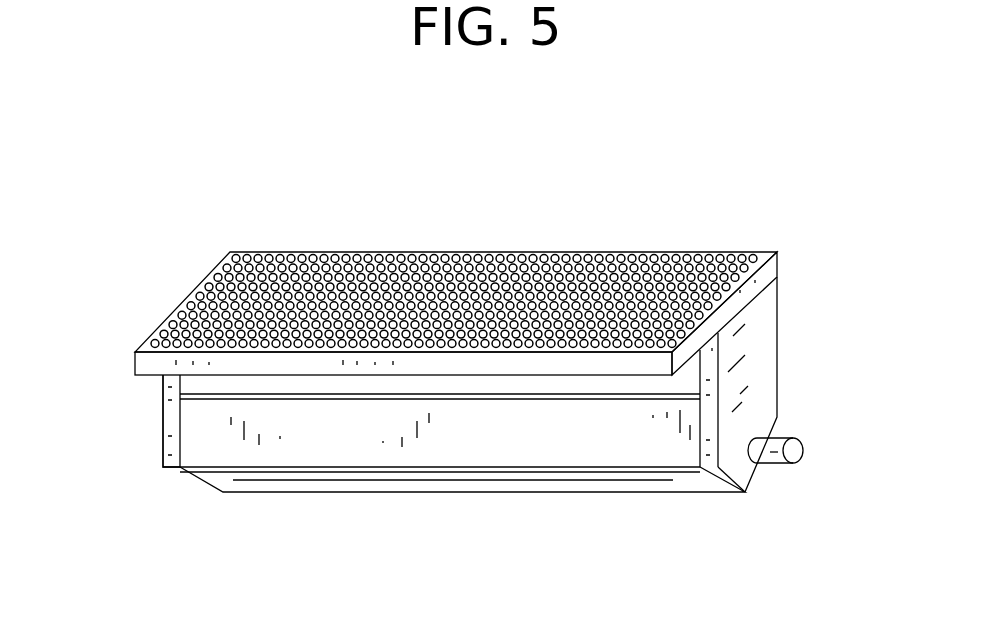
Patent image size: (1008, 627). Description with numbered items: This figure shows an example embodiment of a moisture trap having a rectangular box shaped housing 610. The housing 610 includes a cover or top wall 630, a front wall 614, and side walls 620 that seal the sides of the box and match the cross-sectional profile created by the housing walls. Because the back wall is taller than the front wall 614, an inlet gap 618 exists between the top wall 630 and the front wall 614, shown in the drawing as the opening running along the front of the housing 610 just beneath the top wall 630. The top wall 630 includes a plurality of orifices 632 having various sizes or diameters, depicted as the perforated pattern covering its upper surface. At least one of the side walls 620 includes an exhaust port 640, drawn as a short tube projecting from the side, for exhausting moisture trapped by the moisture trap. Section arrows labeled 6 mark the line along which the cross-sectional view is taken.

The housing 610 is at (667, 442).
The front wall 614 is at (168, 430).
The inlet gap 618 is at (200, 383).
The side walls 620 is at (760, 349).
The top wall 630 is at (598, 262).
The orifices 632 is at (276, 262).
The exhaust port 640 is at (777, 465).
The section line 6 is at (515, 224).